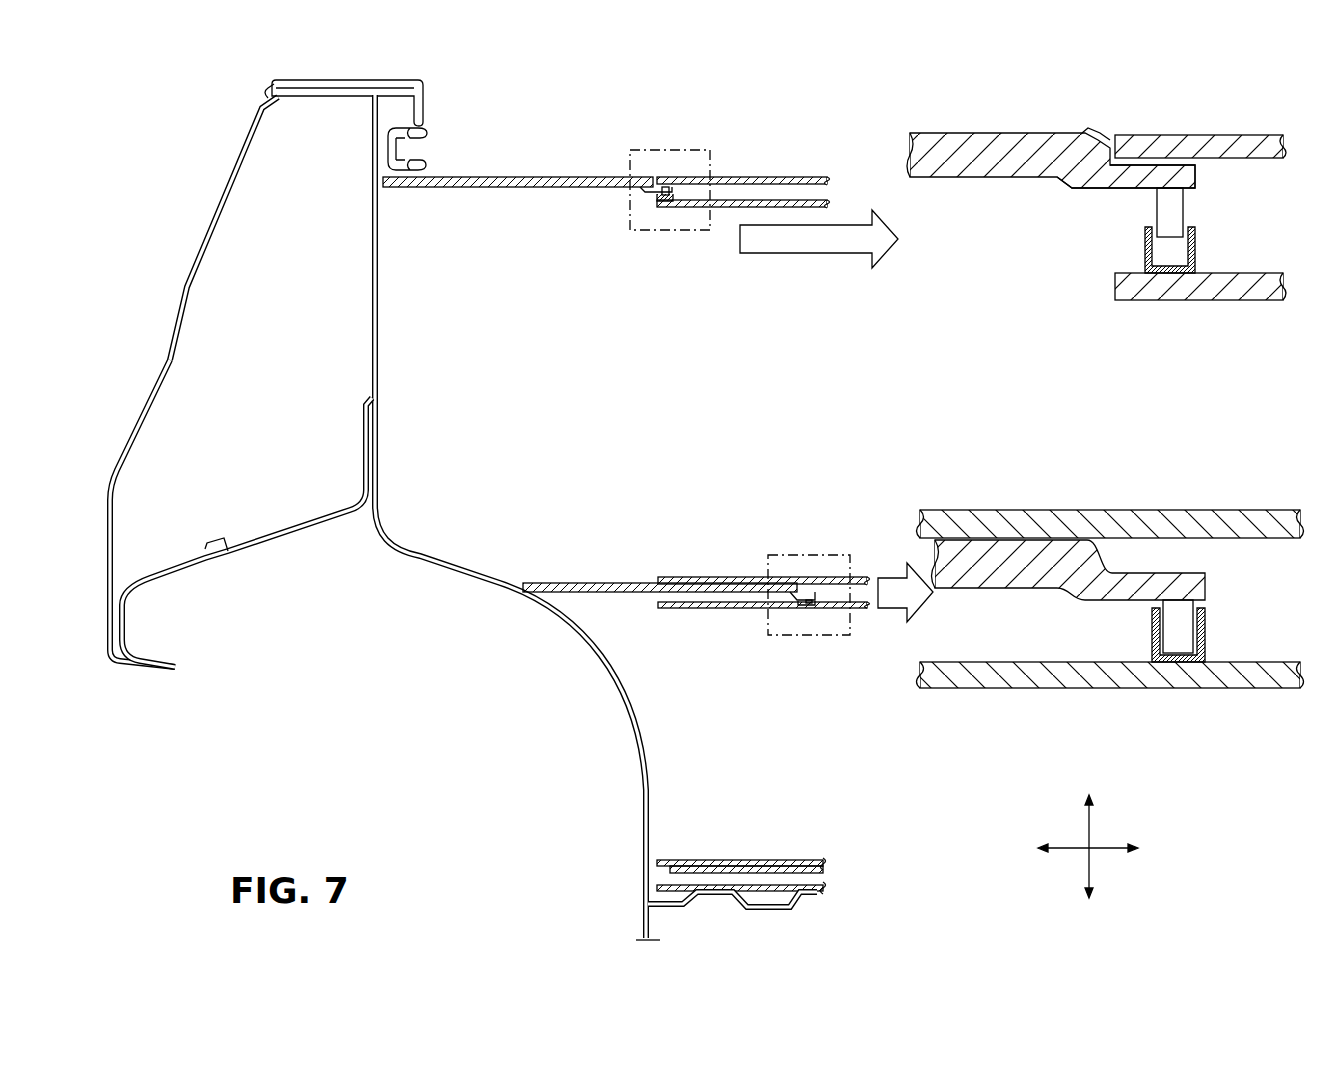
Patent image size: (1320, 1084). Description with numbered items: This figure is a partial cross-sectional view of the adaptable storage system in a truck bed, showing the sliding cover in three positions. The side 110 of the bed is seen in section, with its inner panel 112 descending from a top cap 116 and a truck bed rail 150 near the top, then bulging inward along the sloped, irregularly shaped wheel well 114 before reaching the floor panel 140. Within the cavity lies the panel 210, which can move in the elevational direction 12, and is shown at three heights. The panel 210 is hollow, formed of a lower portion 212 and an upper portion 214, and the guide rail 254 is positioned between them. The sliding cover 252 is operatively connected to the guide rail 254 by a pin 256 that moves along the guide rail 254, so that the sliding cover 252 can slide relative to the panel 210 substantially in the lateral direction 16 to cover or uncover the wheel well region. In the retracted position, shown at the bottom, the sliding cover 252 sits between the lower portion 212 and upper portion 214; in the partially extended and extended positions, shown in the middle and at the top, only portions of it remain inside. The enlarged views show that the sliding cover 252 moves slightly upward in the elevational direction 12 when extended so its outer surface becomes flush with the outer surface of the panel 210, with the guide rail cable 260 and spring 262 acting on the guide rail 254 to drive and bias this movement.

The elevational direction 12 is at (1090, 828).
The lateral direction 16 is at (1108, 848).
The side 110 is at (247, 198).
The inner panel 112 is at (448, 575).
The wheel well 114 is at (170, 348).
The top cap 116 is at (290, 78).
The floor panel 140 is at (767, 907).
The truck bed rail 150 is at (430, 133).
The panel 210 is at (763, 177).
The lower portion 212 is at (1187, 300).
The upper portion 214 is at (1185, 133).
The sliding cover 252 is at (523, 177).
The guide rail 254 is at (1143, 258).
The pin 256 is at (1170, 213).
The guide rail cable 260 is at (1110, 180).
The spring 262 is at (1028, 133).